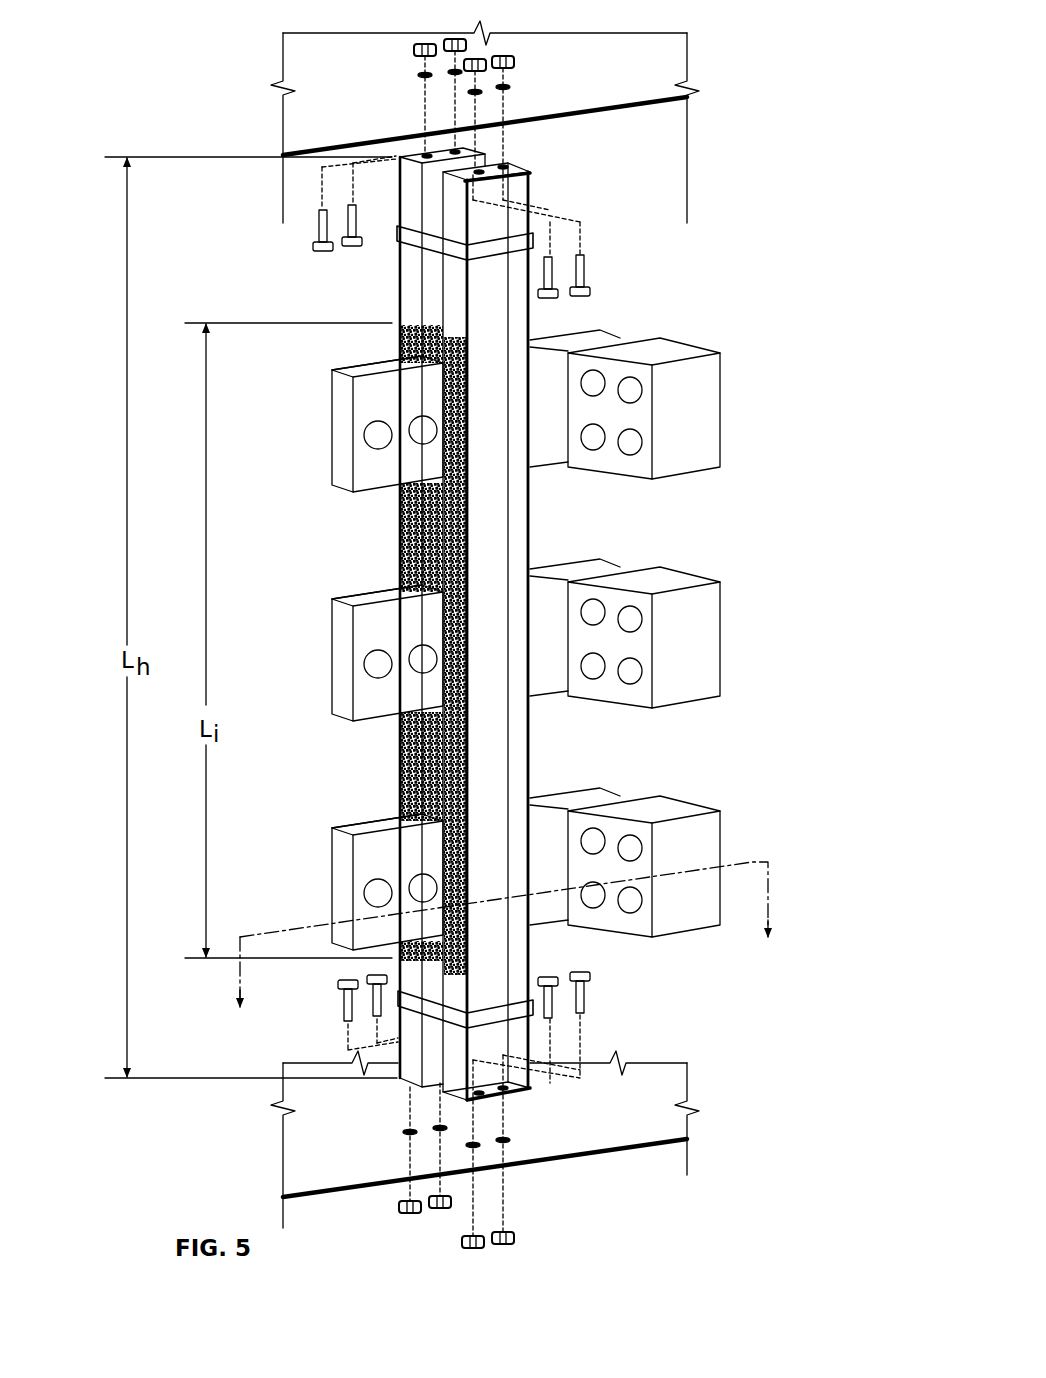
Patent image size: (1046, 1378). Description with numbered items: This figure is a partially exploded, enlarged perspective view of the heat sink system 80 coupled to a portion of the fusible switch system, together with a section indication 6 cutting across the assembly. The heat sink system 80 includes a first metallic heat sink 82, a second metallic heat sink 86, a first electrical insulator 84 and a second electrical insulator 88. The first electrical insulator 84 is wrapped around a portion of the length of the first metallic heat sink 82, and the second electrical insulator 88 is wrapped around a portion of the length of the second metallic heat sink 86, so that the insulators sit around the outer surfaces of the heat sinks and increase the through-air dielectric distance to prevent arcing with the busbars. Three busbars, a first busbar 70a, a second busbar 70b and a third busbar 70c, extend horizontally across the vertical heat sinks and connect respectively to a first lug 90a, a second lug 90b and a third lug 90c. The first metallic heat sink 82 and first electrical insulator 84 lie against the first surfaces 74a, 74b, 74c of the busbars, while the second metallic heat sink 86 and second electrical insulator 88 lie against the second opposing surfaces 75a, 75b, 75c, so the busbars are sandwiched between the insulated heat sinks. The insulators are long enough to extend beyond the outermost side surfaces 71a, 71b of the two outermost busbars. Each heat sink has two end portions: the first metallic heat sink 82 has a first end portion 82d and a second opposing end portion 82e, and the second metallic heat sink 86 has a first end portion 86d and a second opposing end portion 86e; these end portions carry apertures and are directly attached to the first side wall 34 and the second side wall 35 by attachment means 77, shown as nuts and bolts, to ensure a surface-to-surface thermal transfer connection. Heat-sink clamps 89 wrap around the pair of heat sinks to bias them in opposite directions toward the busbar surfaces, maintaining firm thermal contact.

The heat sink system 80 is at (734, 64).
The second side wall 35 is at (361, 121).
The first side wall 34 is at (348, 1160).
The second metallic heat sink 86 is at (413, 272).
The second opposing end portion of second metallic heat sink 86e is at (472, 152).
The first end portion of second metallic heat sink 86d is at (401, 1084).
The first metallic heat sink 82 is at (457, 305).
The second opposing end portion of first metallic heat sink 82e is at (512, 166).
The first end portion of first metallic heat sink 82d is at (515, 1094).
The heat-sink clamp 89 is at (516, 242).
The attachment means 77 is at (320, 208).
The second electrical insulator 88 is at (401, 513).
The first electrical insulator 84 is at (401, 543).
The outermost side surface 71a is at (548, 924).
The outermost side surface 71b is at (598, 336).
The first busbar 70a is at (342, 860).
The second busbar 70b is at (342, 633).
The third busbar 70c is at (342, 402).
The second opposing surface 75a is at (358, 825).
The second opposing surface 75b is at (358, 597).
The second opposing surface 75c is at (358, 368).
The first surface 74a is at (415, 862).
The first surface 74b is at (415, 633).
The first surface 74c is at (415, 404).
The first lug 90a is at (708, 829).
The second lug 90b is at (708, 601).
The third lug 90c is at (708, 372).
The section line 6- 6 is at (501, 957).